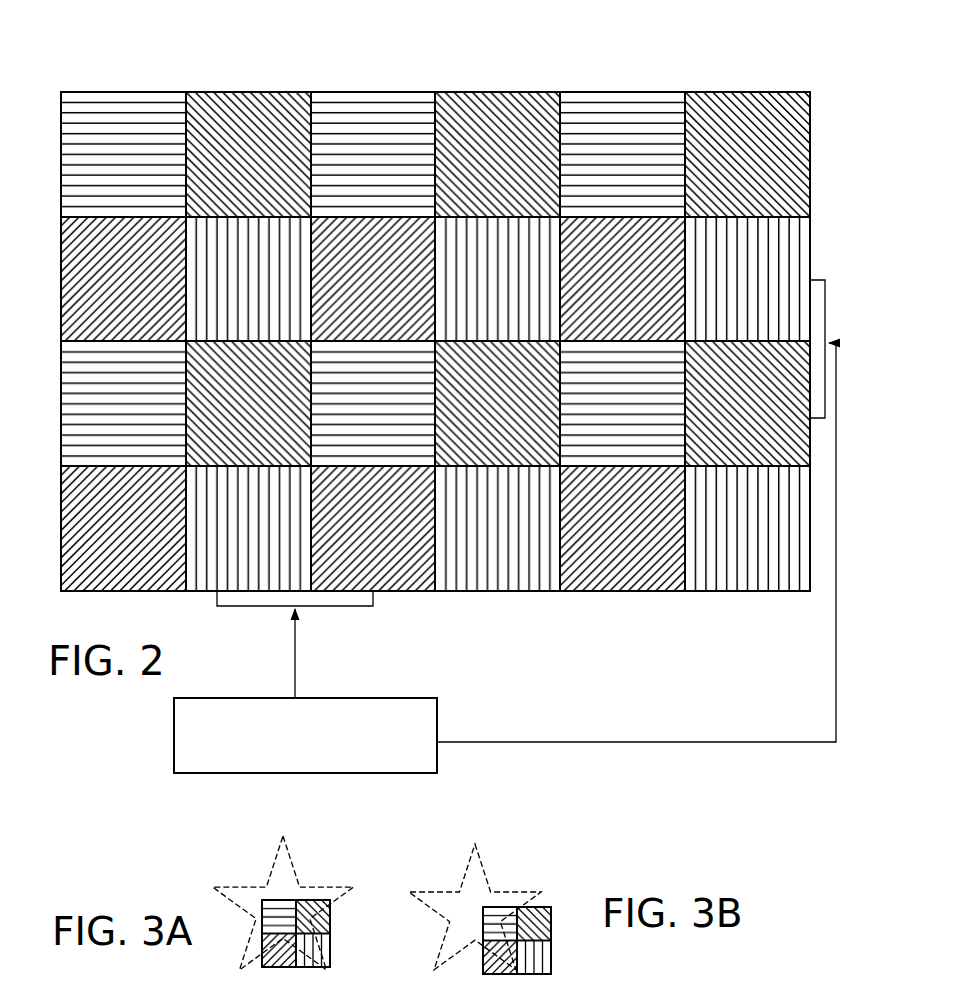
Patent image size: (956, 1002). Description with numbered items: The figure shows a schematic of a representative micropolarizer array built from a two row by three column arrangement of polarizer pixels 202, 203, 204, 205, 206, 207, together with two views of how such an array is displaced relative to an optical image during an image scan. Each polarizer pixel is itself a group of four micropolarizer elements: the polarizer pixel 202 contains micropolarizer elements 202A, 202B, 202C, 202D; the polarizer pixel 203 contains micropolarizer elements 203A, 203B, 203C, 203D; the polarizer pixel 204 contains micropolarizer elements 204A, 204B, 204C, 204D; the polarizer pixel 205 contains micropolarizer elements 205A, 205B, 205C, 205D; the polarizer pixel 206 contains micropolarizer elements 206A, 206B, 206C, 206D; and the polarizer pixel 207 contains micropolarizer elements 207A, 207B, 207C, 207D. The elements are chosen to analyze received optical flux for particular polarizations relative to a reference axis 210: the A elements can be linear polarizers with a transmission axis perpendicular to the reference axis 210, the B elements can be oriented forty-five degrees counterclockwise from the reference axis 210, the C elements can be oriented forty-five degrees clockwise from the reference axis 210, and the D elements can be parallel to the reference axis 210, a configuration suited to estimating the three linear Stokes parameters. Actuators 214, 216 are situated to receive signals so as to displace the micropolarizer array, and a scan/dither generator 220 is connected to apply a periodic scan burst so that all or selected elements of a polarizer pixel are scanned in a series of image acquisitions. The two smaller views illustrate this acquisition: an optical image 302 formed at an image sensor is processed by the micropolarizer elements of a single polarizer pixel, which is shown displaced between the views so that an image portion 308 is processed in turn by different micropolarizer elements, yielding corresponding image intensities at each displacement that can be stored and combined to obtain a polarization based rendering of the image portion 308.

In FIG. 2, the polarizer pixel 202 is at (187, 74).
In FIG. 2, the polarizer pixel 203 is at (435, 74).
In FIG. 2, the polarizer pixel 204 is at (670, 76).
In FIG. 2, the polarizer pixel 205 is at (186, 609).
In FIG. 2, the polarizer pixel 206 is at (419, 614).
In FIG. 2, the polarizer pixel 207 is at (685, 609).
In FIG. 2, the micropolarizer element 202A is at (123, 154).
In FIG. 2, the micropolarizer element 202B is at (248, 154).
In FIG. 2, the micropolarizer element 202C is at (123, 279).
In FIG. 2, the micropolarizer element 202D is at (248, 279).
In FIG. 2, the micropolarizer element 203A is at (373, 154).
In FIG. 2, the micropolarizer element 203B is at (497, 154).
In FIG. 2, the micropolarizer element 203C is at (373, 279).
In FIG. 2, the micropolarizer element 203D is at (497, 279).
In FIG. 2, the micropolarizer element 204A is at (622, 154).
In FIG. 2, the micropolarizer element 204B is at (747, 154).
In FIG. 2, the micropolarizer element 204C is at (622, 279).
In FIG. 2, the micropolarizer element 204D is at (747, 279).
In FIG. 2, the micropolarizer element 205A is at (123, 403).
In FIG. 2, the micropolarizer element 205B is at (248, 403).
In FIG. 2, the micropolarizer element 205C is at (123, 528).
In FIG. 2, the micropolarizer element 205D is at (248, 528).
In FIG. 2, the micropolarizer element 206A is at (373, 403).
In FIG. 2, the micropolarizer element 206B is at (497, 403).
In FIG. 2, the micropolarizer element 206C is at (373, 528).
In FIG. 2, the micropolarizer element 206D is at (497, 528).
In FIG. 2, the micropolarizer element 207A is at (622, 403).
In FIG. 2, the micropolarizer element 207B is at (747, 403).
In FIG. 2, the micropolarizer element 207C is at (622, 528).
In FIG. 2, the micropolarizer element 207D is at (747, 528).
In FIG. 2, the reference axis 210 is at (31, 397).
In FIG. 2, the actuator 214 is at (317, 608).
In FIG. 2, the actuator 216 is at (826, 280).
In FIG. 2, the scan/dither generator 220 is at (174, 731).
In FIG. 3A, the optical image 302 is at (313, 886).
In FIG. 3B, the optical image 302 is at (503, 891).
In FIG. 3A, the image portion 308 is at (311, 948).
In FIG. 3B, the image portion 308 is at (505, 952).